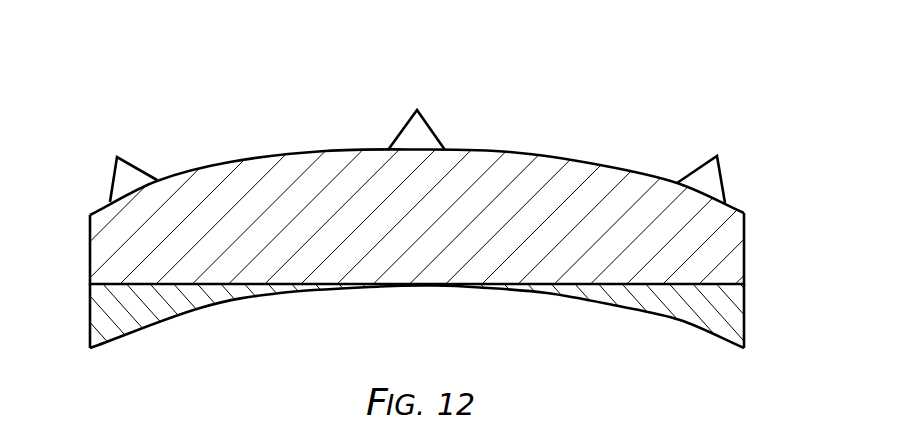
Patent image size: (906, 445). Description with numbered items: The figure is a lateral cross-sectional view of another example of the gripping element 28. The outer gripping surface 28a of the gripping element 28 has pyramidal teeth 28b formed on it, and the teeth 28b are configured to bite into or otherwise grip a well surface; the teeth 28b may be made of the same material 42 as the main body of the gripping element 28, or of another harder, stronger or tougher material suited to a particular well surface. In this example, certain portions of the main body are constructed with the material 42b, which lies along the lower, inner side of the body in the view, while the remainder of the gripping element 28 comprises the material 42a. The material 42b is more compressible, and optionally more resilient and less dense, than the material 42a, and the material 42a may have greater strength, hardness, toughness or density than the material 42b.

The gripping element 28 is at (422, 200).
The gripping surface 28a is at (325, 150).
The teeth 28b is at (110, 170).
The material 42 is at (414, 186).
The material 42a is at (127, 255).
The material 42b is at (110, 308).